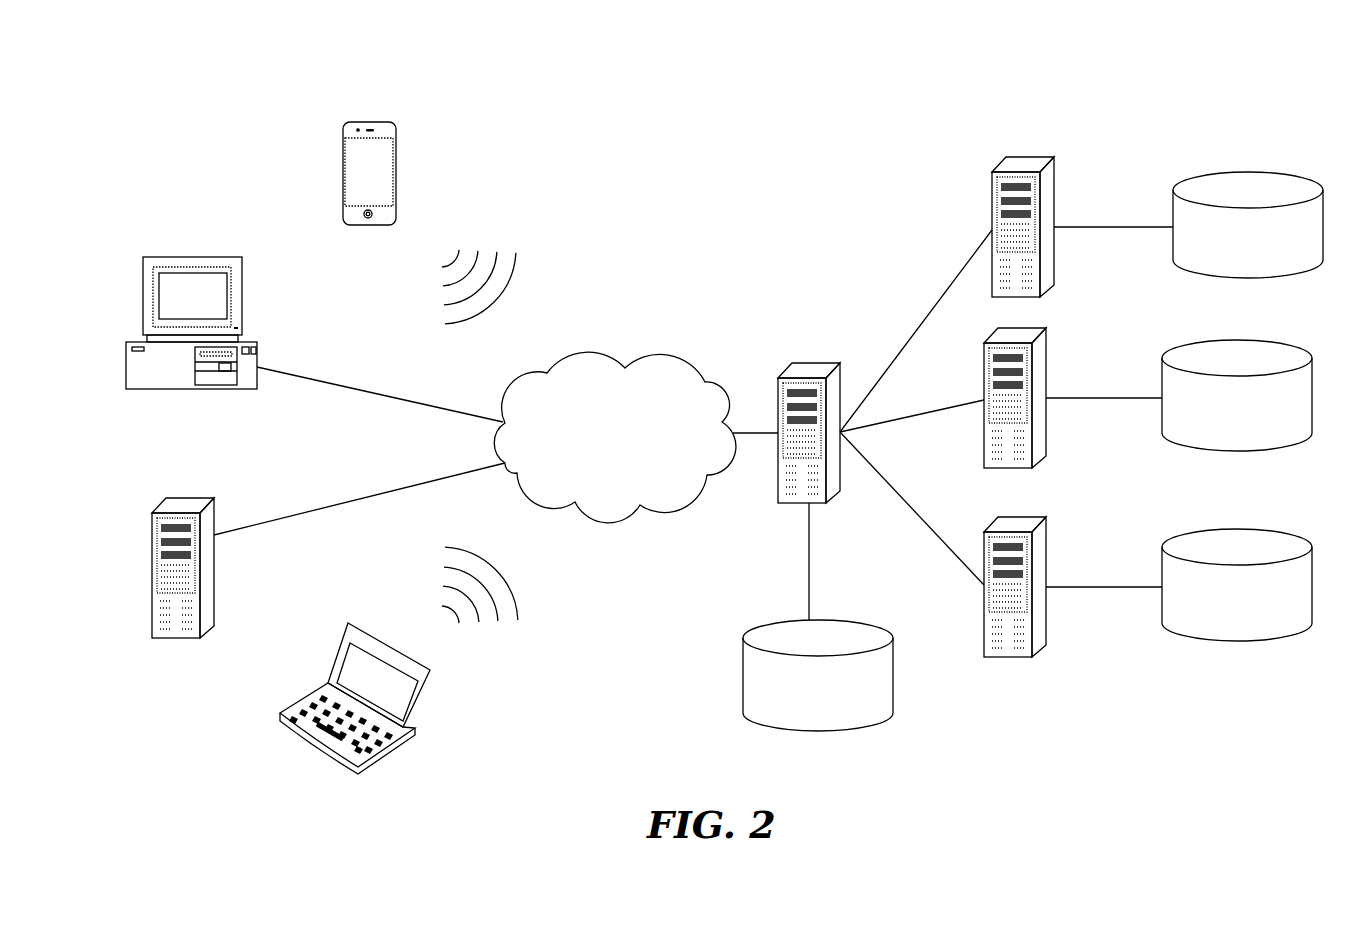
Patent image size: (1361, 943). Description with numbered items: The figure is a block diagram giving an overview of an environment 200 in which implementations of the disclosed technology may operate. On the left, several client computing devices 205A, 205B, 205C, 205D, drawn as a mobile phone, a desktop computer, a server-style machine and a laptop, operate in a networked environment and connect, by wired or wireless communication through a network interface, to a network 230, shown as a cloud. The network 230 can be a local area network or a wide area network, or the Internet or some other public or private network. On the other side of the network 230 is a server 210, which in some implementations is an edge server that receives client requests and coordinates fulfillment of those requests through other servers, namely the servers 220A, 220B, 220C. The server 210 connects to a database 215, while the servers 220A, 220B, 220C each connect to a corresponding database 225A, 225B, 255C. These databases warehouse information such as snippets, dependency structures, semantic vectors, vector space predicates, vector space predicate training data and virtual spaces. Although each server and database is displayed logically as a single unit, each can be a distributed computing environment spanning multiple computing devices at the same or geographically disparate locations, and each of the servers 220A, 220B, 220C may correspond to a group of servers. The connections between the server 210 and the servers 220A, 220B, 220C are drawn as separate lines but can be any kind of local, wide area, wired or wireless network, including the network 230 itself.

The environment 200 is at (845, 128).
The client computing device 205A is at (383, 121).
The client computing device 205B is at (233, 258).
The client computing device 205C is at (205, 497).
The client computing device 205D is at (425, 700).
The server 210 is at (818, 363).
The database 215 is at (867, 622).
The server 220A is at (1054, 156).
The server 220B is at (1046, 327).
The server 220C is at (1046, 516).
The database 225A is at (1240, 172).
The database 225B is at (1235, 341).
The database 255C is at (1235, 529).
The network 230 is at (672, 355).